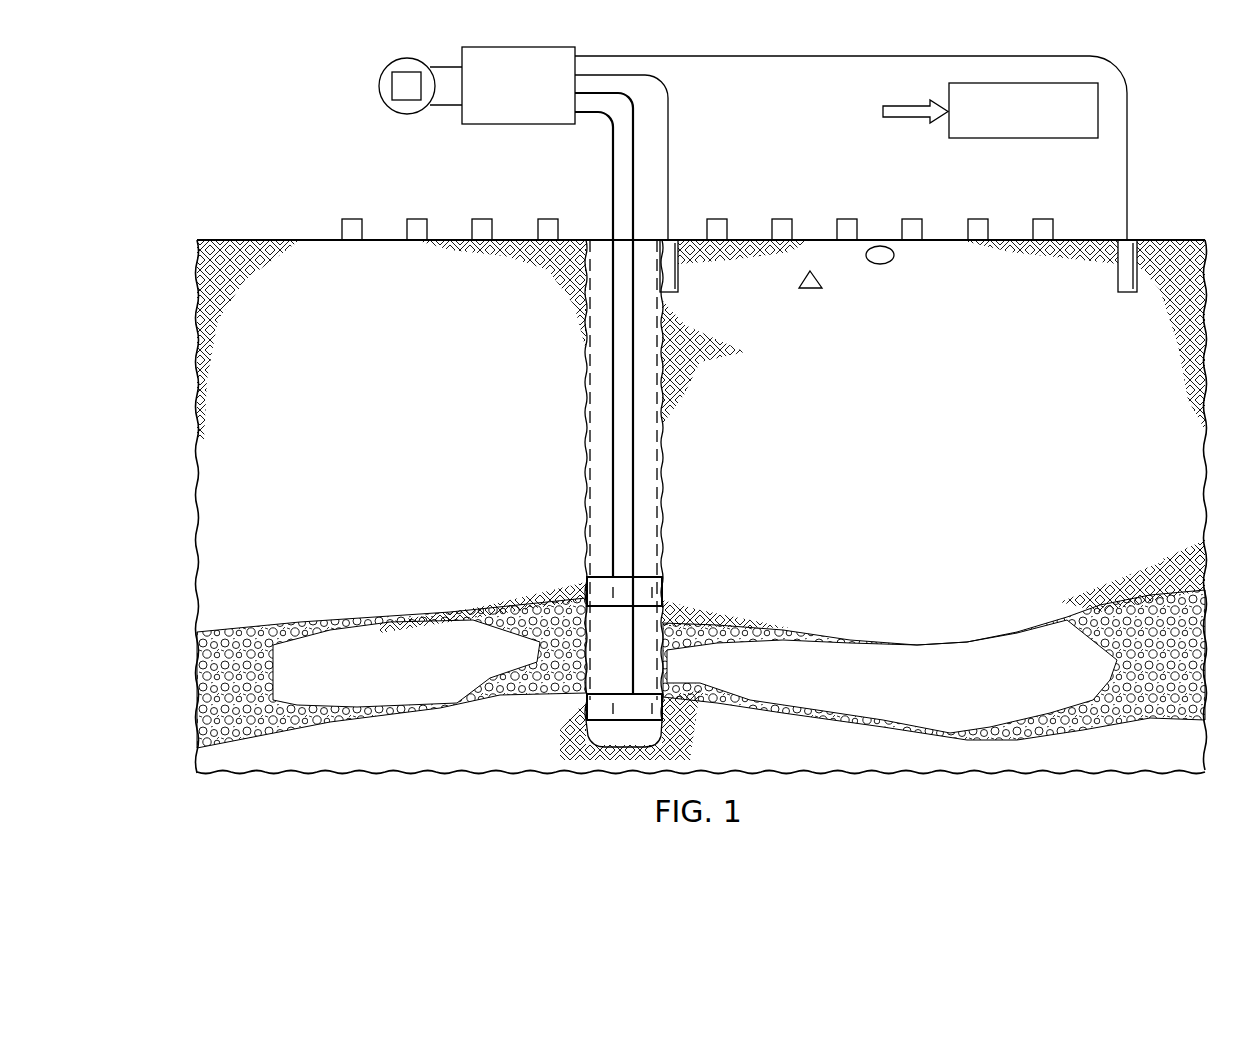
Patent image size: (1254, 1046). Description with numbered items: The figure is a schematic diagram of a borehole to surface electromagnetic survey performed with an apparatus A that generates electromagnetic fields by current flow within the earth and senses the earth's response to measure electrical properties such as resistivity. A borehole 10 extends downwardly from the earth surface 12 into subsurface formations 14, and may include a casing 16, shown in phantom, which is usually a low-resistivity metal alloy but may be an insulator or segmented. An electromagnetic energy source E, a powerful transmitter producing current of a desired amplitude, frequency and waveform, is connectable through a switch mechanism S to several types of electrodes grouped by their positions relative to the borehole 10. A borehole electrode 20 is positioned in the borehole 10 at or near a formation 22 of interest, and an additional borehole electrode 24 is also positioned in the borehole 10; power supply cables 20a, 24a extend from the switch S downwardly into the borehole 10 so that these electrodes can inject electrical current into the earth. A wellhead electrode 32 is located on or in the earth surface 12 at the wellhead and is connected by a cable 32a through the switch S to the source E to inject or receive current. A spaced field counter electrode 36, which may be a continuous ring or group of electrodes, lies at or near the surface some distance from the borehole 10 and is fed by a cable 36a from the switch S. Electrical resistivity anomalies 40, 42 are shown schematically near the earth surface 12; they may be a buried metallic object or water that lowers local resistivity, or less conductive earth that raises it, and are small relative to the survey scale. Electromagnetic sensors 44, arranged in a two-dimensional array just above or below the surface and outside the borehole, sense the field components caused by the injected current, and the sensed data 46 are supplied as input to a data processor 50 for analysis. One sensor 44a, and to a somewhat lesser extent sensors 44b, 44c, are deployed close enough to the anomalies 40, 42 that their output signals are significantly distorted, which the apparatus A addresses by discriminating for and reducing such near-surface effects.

The borehole 10 is at (591, 568).
The earth surface 12 is at (518, 236).
The subsurface formations 14 is at (375, 437).
The casing 16 is at (660, 463).
The borehole electrode 20 is at (594, 688).
The power supply conductor or cable 20a is at (634, 512).
The formation of interest 22 is at (387, 674).
The additional borehole electrode 24 is at (644, 577).
The power supply conductor or cable 24a is at (613, 413).
The wellhead electrode 32 is at (678, 275).
The power supply conductor or cable 32a is at (669, 163).
The field counter electrode 36 is at (1118, 270).
The power supply conductor or cable 36a is at (1128, 152).
The electrical resistivity anomaly 40 is at (891, 262).
The electrical resistivity anomaly 42 is at (812, 290).
The electromagnetic sensors 44 is at (410, 214).
The sensor 44a is at (846, 218).
The sensor 44b is at (781, 218).
The sensor 44c is at (910, 218).
The sensed data 46 is at (907, 101).
The data processor 50 is at (1070, 139).
The apparatus A is at (363, 72).
The electromagnetic energy source E is at (388, 118).
The switch mechanism S is at (525, 130).